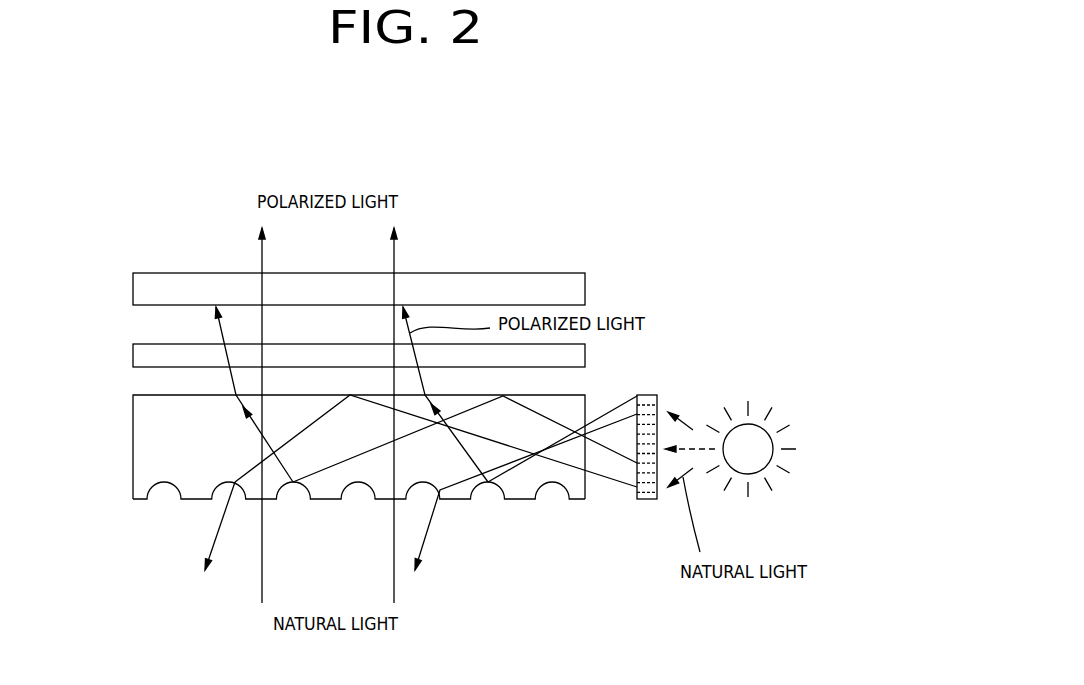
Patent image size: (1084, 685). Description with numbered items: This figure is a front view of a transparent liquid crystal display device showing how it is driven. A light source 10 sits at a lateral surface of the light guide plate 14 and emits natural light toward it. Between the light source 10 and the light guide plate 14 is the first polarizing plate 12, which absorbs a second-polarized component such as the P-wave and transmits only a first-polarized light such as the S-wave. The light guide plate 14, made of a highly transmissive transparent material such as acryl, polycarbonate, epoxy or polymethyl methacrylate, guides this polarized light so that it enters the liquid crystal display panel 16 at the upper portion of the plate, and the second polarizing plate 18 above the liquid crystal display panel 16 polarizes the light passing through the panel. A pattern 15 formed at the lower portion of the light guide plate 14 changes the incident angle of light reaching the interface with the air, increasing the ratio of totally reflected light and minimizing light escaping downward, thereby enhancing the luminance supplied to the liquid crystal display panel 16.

The light source 10 is at (763, 445).
The first polarizing plate 12 is at (650, 498).
The light guide plate 14 is at (140, 441).
The pattern 15 is at (505, 500).
The liquid crystal display panel 16 is at (580, 358).
The second polarizing plate 18 is at (580, 288).